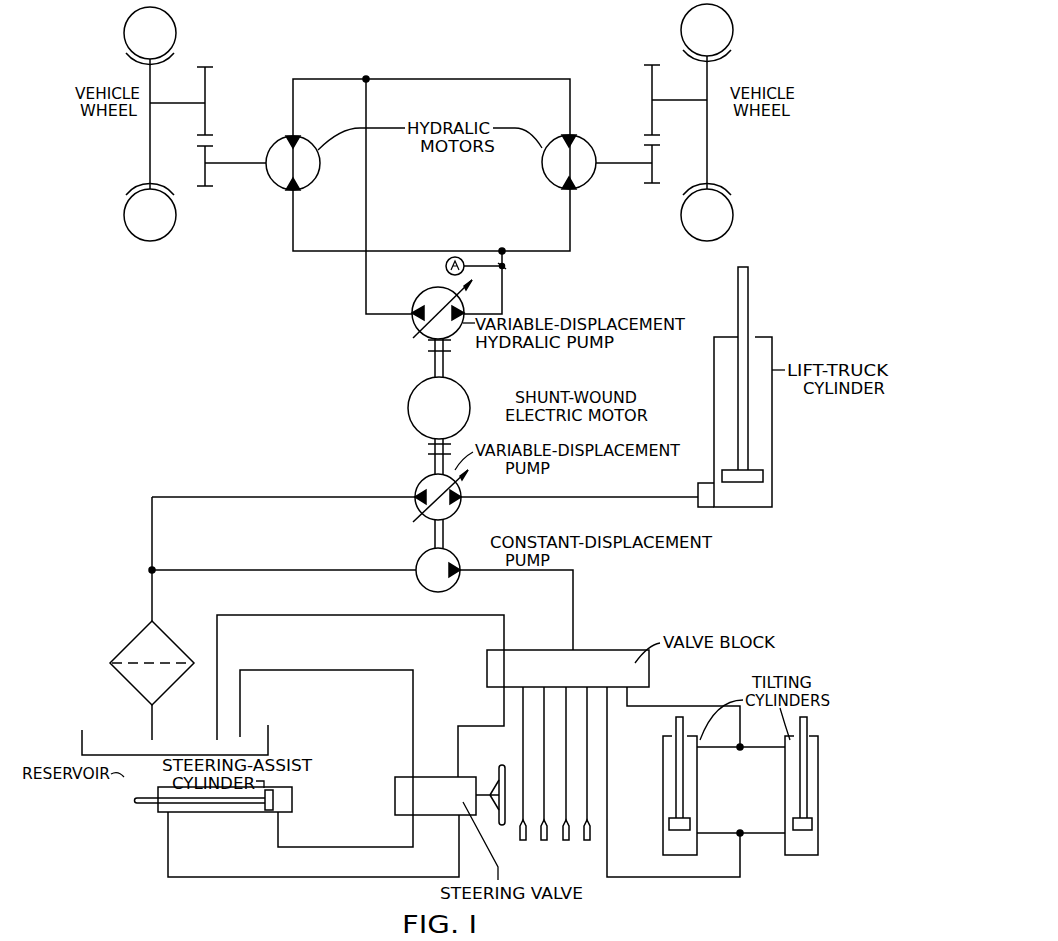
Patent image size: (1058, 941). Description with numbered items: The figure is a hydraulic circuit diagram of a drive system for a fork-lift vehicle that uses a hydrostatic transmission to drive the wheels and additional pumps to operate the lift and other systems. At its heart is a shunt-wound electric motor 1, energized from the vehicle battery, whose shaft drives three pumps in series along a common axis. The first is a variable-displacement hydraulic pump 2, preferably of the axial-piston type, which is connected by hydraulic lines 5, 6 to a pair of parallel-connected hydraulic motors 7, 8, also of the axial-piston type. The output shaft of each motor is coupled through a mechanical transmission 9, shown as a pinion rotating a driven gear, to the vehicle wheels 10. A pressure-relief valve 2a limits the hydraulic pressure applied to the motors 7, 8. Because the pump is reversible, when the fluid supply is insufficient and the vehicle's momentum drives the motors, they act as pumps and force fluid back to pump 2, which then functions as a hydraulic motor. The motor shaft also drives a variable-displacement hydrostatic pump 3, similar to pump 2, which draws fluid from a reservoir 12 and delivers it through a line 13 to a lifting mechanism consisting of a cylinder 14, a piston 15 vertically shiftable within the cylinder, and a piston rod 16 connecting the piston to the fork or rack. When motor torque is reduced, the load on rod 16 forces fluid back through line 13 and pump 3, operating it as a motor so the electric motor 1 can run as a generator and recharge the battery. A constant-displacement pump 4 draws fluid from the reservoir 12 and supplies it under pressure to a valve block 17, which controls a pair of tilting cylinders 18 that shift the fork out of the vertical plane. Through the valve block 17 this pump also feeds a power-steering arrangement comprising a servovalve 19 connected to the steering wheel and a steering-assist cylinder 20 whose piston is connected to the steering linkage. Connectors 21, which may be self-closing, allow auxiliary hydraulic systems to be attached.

The shunt-wound electric motor 1 is at (515, 399).
The variable-displacement hydraulic pump 2 is at (426, 292).
The pressure-relief valve 2a is at (465, 272).
The variable-displacement hydrostatic pump 3 is at (418, 484).
The constant-displacement pump 4 is at (455, 556).
The hydraulic line 5 is at (502, 292).
The hydraulic line 6 is at (366, 283).
The hydraulic motor 7 is at (277, 174).
The hydraulic motor 8 is at (589, 170).
The mechanical transmission 9 is at (207, 90).
The vehicle wheel 10 is at (143, 236).
The reservoir 12 is at (103, 748).
The line 13 is at (634, 500).
The cylinder 14 is at (765, 500).
The piston 15 is at (760, 470).
The piston rod 16 is at (749, 312).
The valve block 17 is at (623, 650).
The tilting cylinder 18 is at (663, 841).
The servovalve 19 is at (395, 781).
The steering-assist cylinder 20 is at (137, 800).
The connector 21 is at (596, 845).